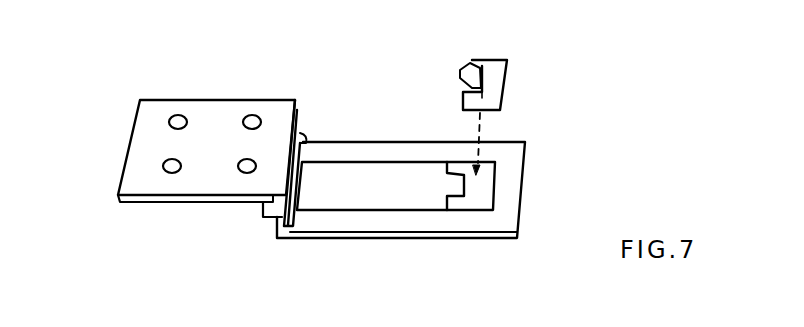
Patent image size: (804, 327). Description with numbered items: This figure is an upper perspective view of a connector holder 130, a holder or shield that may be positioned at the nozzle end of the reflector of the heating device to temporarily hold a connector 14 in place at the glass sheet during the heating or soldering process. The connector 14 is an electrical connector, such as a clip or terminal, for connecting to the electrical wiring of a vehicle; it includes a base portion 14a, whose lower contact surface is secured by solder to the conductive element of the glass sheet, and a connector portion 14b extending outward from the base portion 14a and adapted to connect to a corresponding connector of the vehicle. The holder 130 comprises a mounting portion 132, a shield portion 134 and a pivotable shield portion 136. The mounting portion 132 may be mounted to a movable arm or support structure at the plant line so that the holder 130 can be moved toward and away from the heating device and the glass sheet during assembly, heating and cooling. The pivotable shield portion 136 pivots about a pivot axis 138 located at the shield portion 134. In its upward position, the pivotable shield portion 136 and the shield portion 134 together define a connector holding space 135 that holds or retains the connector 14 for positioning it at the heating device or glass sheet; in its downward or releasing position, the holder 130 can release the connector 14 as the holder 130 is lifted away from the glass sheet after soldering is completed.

The connector holder 130 is at (330, 156).
The mounting portion 132 is at (143, 155).
The shield portion 134 is at (424, 233).
The connector holding space 135 is at (478, 192).
The pivotable shield portion 136 is at (348, 197).
The pivot axis 138 is at (311, 195).
The connector 14 is at (507, 60).
The base portion 14a is at (492, 98).
The connector portion 14b is at (462, 68).